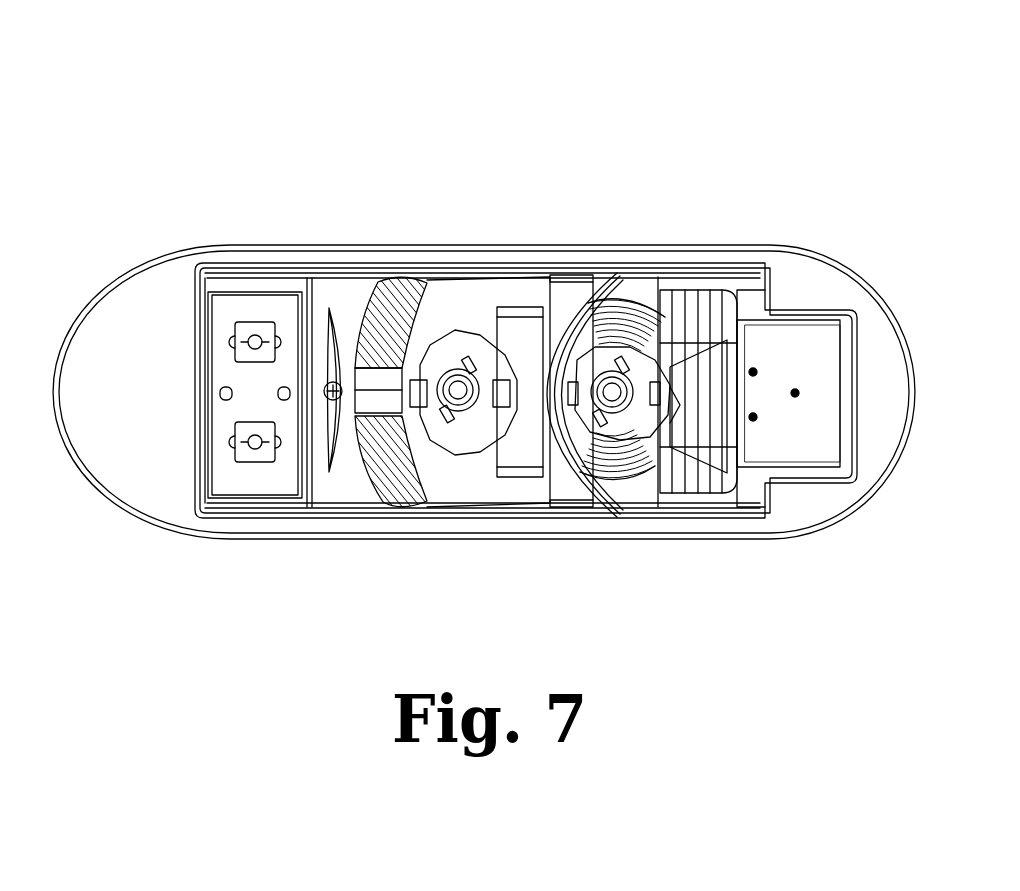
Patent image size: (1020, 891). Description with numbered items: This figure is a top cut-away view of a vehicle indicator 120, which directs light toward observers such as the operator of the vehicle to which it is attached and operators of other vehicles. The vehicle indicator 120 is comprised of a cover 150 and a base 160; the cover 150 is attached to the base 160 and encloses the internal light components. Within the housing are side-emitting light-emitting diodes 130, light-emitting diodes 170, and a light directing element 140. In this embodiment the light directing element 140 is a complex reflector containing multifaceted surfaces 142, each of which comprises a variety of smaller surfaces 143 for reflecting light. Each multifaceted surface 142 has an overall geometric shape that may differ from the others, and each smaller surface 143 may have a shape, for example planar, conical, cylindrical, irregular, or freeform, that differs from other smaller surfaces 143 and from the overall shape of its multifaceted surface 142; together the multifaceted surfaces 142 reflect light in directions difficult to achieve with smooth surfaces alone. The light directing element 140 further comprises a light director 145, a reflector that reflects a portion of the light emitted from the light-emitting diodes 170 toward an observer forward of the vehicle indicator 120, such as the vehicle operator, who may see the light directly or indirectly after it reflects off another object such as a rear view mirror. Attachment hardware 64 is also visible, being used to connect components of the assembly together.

The vehicle indicator 120 is at (517, 97).
The side-emitting light-emitting diodes 130 is at (458, 390).
The light directing element 140 is at (388, 500).
The multifaceted surfaces 142 is at (413, 298).
The smaller surfaces 143 is at (373, 380).
The light director 145 is at (343, 470).
The cover 150 is at (155, 252).
The base 160 is at (115, 516).
The light-emitting diodes 170 is at (247, 338).
The attachment hardware 64 is at (323, 387).